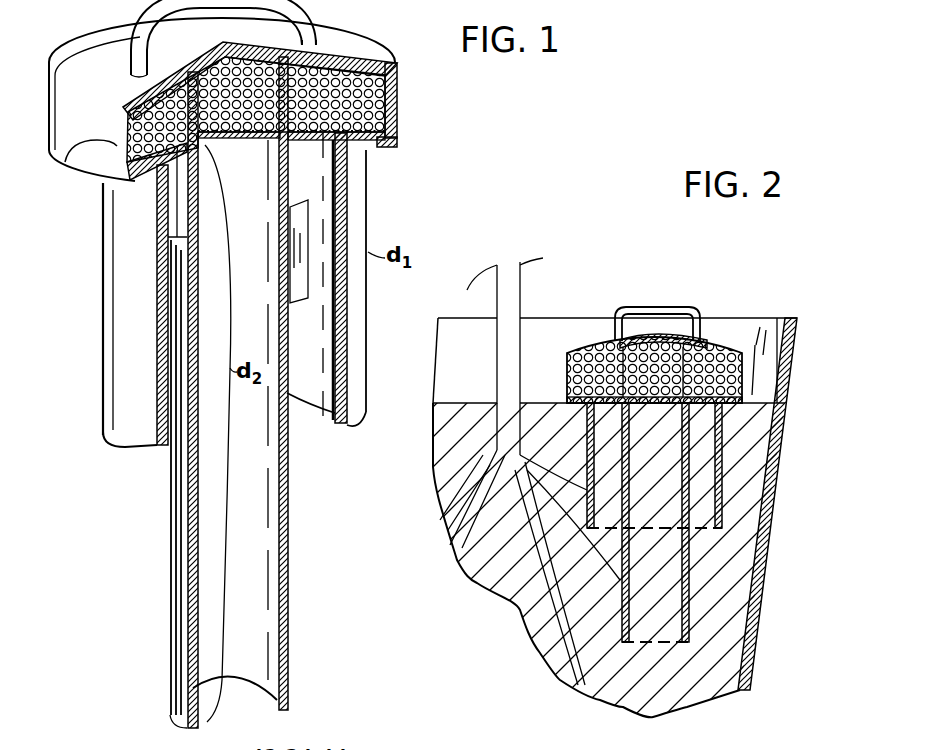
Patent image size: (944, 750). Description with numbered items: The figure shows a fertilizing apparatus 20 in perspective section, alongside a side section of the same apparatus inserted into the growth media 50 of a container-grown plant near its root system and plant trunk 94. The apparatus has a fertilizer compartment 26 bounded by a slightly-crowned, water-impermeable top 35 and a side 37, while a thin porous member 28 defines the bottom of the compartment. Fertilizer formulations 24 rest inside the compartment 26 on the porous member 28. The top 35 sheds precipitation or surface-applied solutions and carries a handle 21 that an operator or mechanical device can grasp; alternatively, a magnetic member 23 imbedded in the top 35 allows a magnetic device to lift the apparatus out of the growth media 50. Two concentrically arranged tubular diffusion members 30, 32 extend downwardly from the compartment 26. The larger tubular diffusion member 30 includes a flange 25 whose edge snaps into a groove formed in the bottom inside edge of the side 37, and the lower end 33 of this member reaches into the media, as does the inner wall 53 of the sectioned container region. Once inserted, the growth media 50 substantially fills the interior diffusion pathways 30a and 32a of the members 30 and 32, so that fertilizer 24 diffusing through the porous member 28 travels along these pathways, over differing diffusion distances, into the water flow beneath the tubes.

In FIG. 1, the fertilizing apparatus 20 is at (104, 483).
In FIG. 2, the fertilizing apparatus 20 is at (636, 328).
In FIG. 2, the handle 21 is at (698, 313).
In FIG. 2, the magnetic member 23 is at (670, 340).
In FIG. 1, the fertilizer formulations 24 is at (345, 104).
In FIG. 2, the fertilizer formulations 24 is at (722, 350).
In FIG. 1, the flange 25 is at (378, 146).
In FIG. 1, the compartment 26 is at (65, 162).
In FIG. 1, the porous member 28 is at (315, 135).
In FIG. 1, the tubular diffusion member 30 is at (117, 357).
In FIG. 2, the tubular diffusion member 30 is at (722, 465).
In FIG. 1, the diffusion pathway 30a is at (322, 245).
In FIG. 1, the tubular diffusion member 32 is at (168, 600).
In FIG. 2, the tubular diffusion member 32 is at (687, 593).
In FIG. 1, the diffusion pathway 32a is at (252, 528).
In FIG. 1, the lower end of outer tube 33 is at (337, 425).
In FIG. 1, the top 35 is at (365, 38).
In FIG. 1, the side 37 is at (52, 96).
In FIG. 2, the growth media 50 is at (727, 580).
In FIG. 2, the inner bone wall 53 is at (755, 657).
In FIG. 2, the plant trunk 94 is at (523, 295).